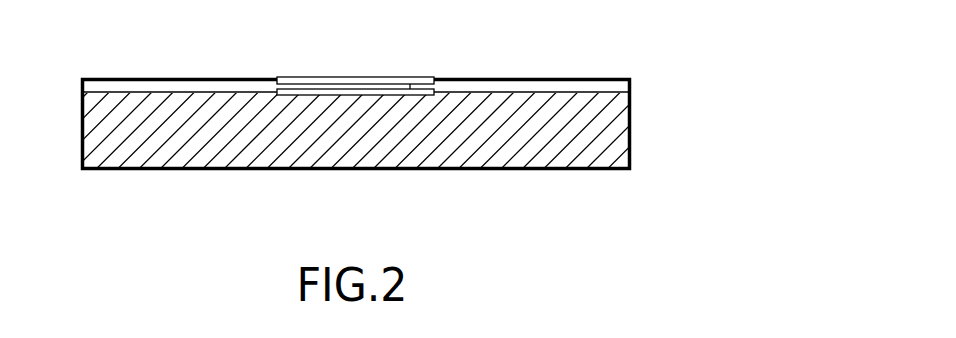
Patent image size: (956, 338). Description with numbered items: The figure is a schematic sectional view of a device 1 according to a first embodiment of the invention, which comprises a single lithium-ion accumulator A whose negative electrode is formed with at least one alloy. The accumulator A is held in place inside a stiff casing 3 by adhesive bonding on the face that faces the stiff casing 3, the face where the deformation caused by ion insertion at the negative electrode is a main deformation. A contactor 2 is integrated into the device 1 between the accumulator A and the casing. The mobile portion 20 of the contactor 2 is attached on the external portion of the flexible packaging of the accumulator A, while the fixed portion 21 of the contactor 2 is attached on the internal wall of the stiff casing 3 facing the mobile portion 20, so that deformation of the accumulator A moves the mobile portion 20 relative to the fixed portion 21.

The device 1 is at (366, 128).
The contactor 2 is at (369, 115).
The stiff casing 3 is at (532, 72).
The mobile portion 20 is at (410, 95).
The fixed portion 21 is at (410, 77).
The lithium-ion accumulator A is at (181, 155).